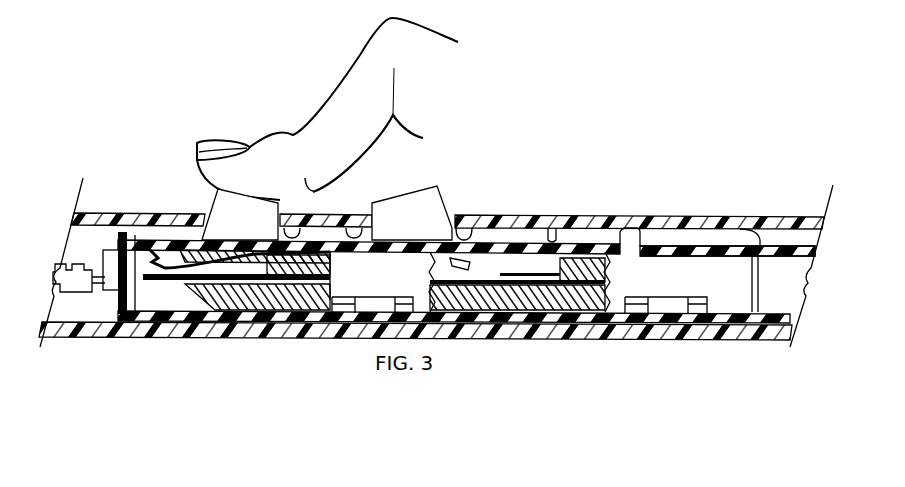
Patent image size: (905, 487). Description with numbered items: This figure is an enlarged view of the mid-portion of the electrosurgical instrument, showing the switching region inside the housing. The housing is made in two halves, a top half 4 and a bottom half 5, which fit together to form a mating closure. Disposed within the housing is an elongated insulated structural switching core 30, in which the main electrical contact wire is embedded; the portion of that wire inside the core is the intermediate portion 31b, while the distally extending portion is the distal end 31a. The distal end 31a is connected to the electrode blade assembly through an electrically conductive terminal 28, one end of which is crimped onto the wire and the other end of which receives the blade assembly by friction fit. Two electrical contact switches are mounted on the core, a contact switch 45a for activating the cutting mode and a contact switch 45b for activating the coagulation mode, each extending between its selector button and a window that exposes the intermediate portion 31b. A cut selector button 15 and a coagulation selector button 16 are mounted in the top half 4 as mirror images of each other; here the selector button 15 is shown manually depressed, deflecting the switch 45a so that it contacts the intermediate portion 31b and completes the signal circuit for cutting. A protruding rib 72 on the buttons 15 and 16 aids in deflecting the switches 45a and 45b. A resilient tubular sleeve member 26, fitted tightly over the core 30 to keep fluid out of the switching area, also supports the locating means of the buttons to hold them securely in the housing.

The top half 4 is at (705, 217).
The bottom half 5 is at (722, 340).
The resilient tubular sleeve member 26 is at (620, 247).
The protruding rib 72 is at (162, 213).
The cut selector button 15 is at (268, 213).
The coagulation selector button 16 is at (425, 203).
The electrically conductive terminal 28 is at (65, 340).
The distal end of the main contact wire 31a is at (105, 340).
The insulated structural switching core 30 is at (165, 340).
The contact switch 45a is at (255, 340).
The intermediate portion of the main contact wire 31b is at (512, 340).
The contact switch 45b is at (595, 340).